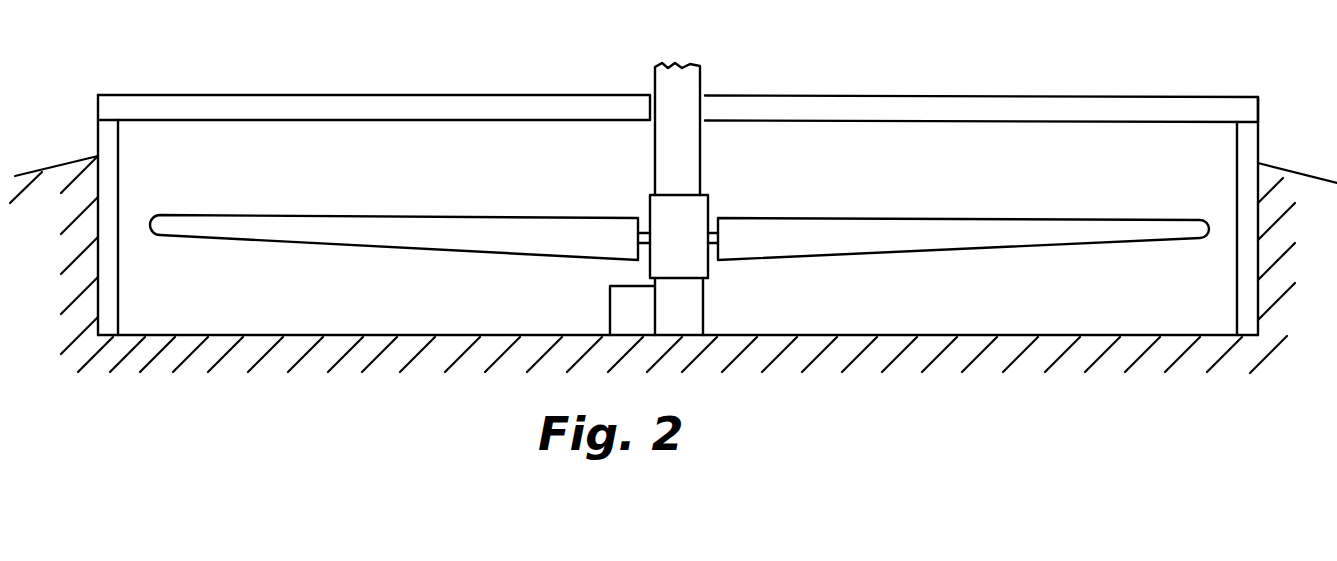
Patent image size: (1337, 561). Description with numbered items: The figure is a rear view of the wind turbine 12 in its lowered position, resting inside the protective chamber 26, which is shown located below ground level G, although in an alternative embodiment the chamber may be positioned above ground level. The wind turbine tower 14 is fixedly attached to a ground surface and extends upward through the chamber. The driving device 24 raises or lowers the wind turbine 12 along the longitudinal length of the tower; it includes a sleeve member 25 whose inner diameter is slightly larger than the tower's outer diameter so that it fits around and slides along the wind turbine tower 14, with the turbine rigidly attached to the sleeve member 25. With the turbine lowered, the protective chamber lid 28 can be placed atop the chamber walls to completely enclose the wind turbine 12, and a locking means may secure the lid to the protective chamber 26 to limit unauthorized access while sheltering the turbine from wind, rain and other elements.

The wind turbine 12 is at (679, 183).
The wind turbine tower 14 is at (672, 170).
The driving device 24 is at (630, 310).
The sleeve member 25 is at (700, 213).
The protective chamber 26 is at (678, 193).
The protective chamber lid 28 is at (362, 105).
The ground level G is at (70, 160).